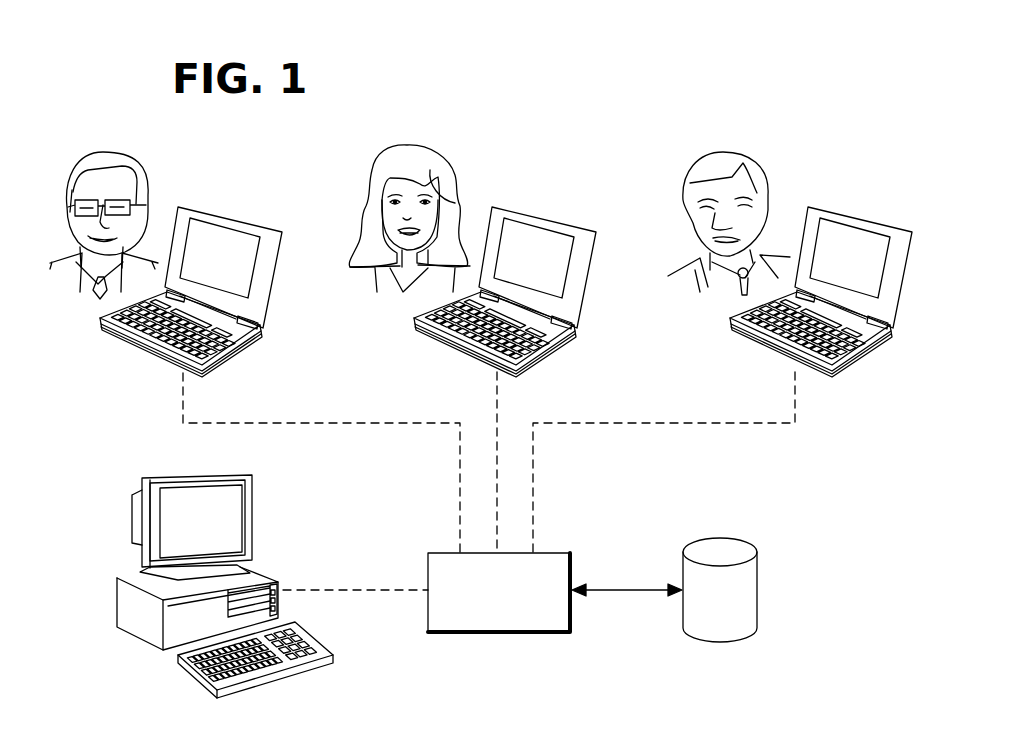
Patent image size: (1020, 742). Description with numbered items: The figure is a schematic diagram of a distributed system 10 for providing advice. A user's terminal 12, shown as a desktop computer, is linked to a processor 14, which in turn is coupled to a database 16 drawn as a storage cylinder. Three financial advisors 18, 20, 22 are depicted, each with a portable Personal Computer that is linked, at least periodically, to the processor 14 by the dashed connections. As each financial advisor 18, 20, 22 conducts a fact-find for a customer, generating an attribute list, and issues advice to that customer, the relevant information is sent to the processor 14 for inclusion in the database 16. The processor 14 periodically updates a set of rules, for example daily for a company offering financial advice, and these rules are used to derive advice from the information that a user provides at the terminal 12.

The system 10 is at (662, 73).
The user's terminal 12 is at (155, 478).
The processor 14 is at (481, 603).
The database 16 is at (704, 610).
The financial advisor 18 is at (99, 152).
The financial advisor 20 is at (430, 148).
The financial advisor 22 is at (750, 152).